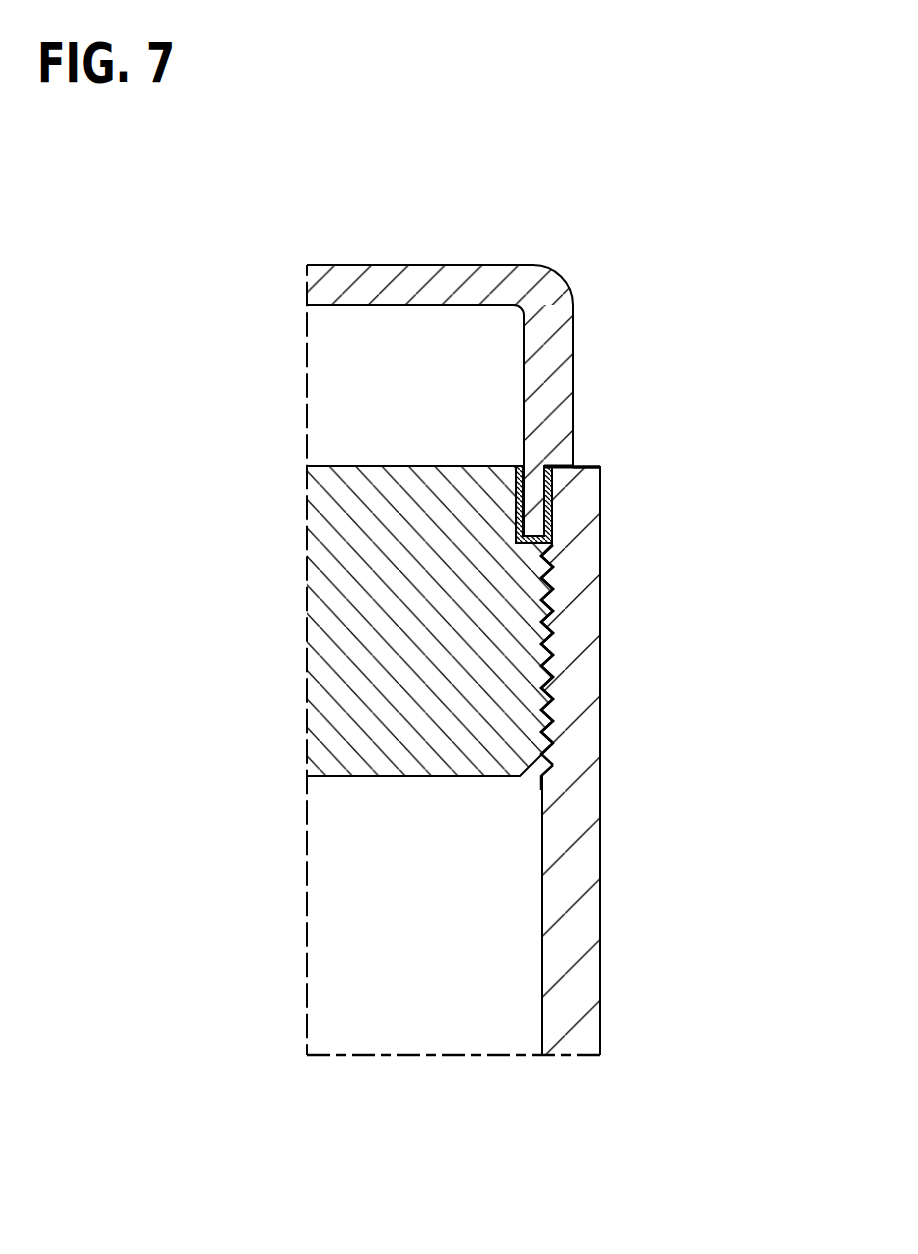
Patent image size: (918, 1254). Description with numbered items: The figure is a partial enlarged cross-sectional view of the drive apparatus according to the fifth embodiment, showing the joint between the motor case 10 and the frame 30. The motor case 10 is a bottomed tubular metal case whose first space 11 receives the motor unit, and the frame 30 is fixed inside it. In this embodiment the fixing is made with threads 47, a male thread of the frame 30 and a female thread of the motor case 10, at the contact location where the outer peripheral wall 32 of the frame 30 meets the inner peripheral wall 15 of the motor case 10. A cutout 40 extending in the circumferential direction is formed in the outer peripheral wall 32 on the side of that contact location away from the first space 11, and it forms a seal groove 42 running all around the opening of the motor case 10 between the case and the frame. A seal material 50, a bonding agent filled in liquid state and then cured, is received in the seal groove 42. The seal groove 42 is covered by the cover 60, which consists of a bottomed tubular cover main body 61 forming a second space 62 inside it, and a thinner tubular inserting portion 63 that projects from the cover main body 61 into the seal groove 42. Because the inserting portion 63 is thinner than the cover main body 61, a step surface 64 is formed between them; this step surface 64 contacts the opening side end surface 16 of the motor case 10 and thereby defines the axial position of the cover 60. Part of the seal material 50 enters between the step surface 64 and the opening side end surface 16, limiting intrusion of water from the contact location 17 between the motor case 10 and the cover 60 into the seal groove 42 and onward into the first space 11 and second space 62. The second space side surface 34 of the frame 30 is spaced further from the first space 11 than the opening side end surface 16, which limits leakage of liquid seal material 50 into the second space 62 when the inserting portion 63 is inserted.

The motor case 10 is at (617, 701).
The first space 11 is at (429, 931).
The inner peripheral wall 15 is at (540, 704).
The opening side end surface 16 is at (575, 466).
The contact location 17 is at (580, 460).
The frame 30 is at (463, 594).
The outer peripheral wall 32 is at (543, 692).
The second space side surface 34 is at (403, 466).
The cutout 40 is at (517, 529).
The seal groove 42 is at (553, 497).
The threads 47 is at (554, 627).
The seal material 50 is at (553, 532).
The cover 60 is at (445, 353).
The cover main body 61 is at (553, 318).
The second space 62 is at (426, 397).
The inserting portion 63 is at (527, 516).
The step surface 64 is at (556, 482).